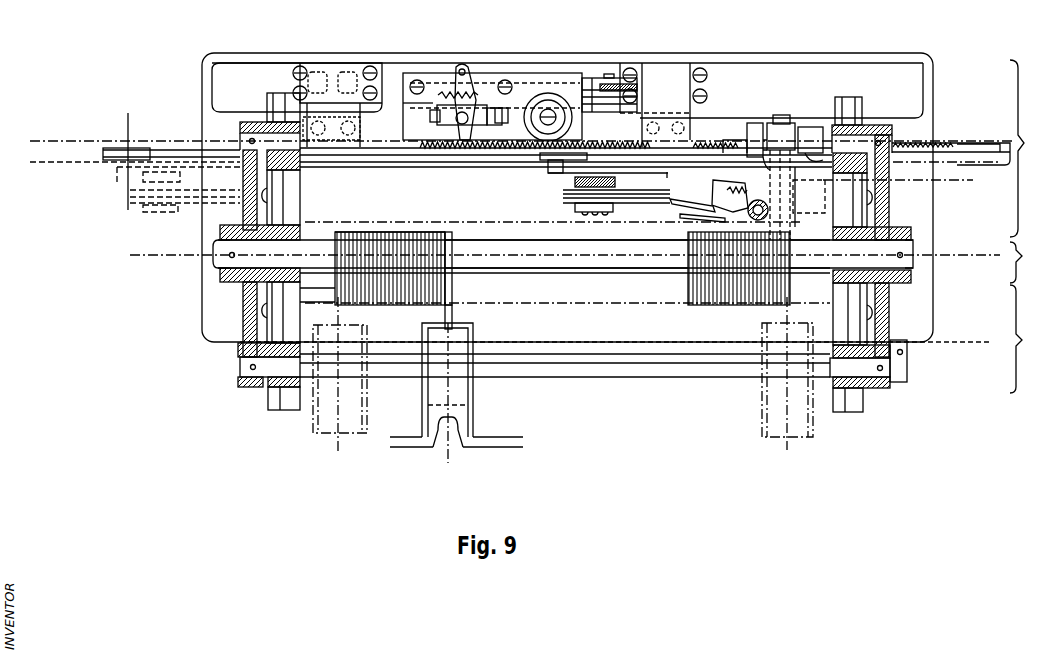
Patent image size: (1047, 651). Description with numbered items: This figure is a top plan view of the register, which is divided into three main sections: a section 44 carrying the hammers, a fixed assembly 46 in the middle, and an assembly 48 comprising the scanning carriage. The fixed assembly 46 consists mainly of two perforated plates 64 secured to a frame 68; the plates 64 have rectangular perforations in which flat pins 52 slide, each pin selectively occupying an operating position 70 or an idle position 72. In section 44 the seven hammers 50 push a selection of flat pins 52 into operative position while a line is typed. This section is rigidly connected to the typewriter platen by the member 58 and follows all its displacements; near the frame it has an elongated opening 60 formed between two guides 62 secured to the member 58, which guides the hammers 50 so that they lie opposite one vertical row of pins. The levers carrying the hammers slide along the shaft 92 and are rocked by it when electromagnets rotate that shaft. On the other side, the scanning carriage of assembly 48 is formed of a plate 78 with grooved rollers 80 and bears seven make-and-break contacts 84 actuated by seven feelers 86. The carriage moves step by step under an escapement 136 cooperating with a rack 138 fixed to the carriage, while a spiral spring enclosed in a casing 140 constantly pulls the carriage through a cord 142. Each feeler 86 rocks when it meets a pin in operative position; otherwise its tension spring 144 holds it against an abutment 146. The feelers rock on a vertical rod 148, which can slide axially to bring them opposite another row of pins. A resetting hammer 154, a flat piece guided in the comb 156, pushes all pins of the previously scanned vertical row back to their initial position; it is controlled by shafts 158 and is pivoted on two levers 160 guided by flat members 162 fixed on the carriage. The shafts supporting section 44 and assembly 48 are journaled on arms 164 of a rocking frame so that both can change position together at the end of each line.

The frame 68 is at (202, 77).
The assembly 48 is at (537, 148).
The fixed assembly 46 is at (587, 271).
The section 44 is at (642, 339).
The arms 164 is at (243, 301).
The hammers 50 is at (440, 318).
The flat pins 52 is at (690, 285).
The idle position 72 is at (440, 230).
The operating position 70 is at (452, 231).
The perforated plates 64 is at (517, 237).
The elongated opening 60 is at (455, 325).
The guides 62 is at (423, 392).
The member 58 is at (410, 447).
The shaft 92 is at (600, 378).
The escapement 136 is at (476, 85).
The rack 138 is at (432, 143).
The casing 140 is at (538, 126).
The cord 142 is at (630, 137).
The plate 78 is at (667, 176).
The make-and-break contacts 84 is at (650, 207).
The feelers 86 is at (693, 218).
The abutment 146 is at (737, 198).
The shafts 158 is at (733, 140).
The tension spring 144 is at (758, 125).
The levers 160 is at (763, 135).
The flat members 162 is at (752, 140).
The vertical rod 148 is at (770, 157).
The grooved rollers 80 is at (810, 140).
The comb 156 is at (792, 218).
The resetting hammer 154 is at (786, 243).